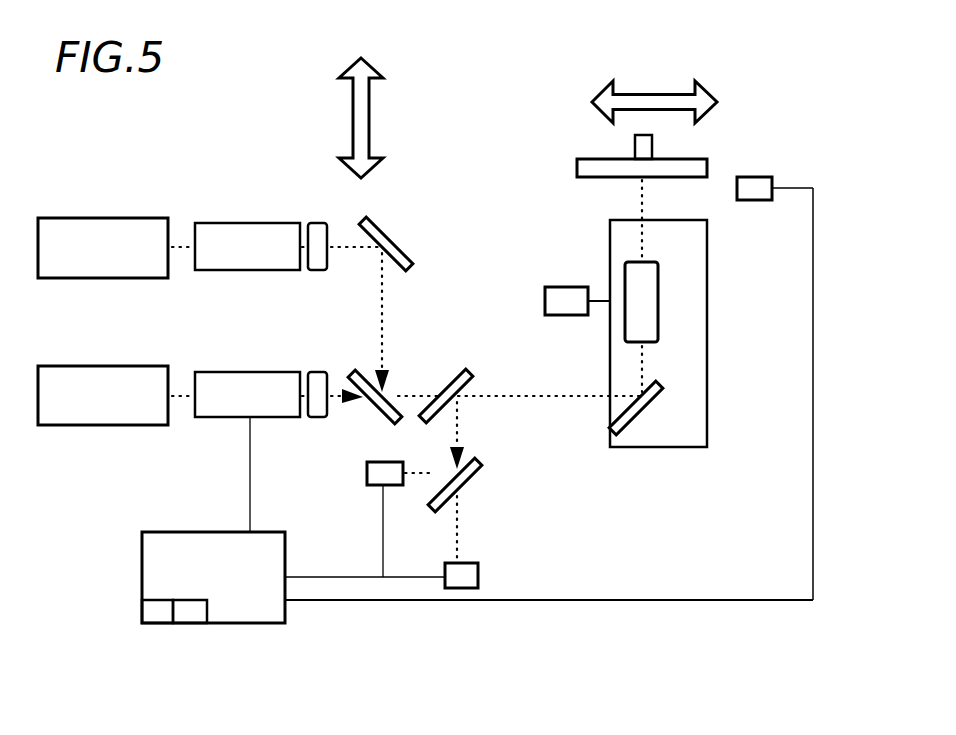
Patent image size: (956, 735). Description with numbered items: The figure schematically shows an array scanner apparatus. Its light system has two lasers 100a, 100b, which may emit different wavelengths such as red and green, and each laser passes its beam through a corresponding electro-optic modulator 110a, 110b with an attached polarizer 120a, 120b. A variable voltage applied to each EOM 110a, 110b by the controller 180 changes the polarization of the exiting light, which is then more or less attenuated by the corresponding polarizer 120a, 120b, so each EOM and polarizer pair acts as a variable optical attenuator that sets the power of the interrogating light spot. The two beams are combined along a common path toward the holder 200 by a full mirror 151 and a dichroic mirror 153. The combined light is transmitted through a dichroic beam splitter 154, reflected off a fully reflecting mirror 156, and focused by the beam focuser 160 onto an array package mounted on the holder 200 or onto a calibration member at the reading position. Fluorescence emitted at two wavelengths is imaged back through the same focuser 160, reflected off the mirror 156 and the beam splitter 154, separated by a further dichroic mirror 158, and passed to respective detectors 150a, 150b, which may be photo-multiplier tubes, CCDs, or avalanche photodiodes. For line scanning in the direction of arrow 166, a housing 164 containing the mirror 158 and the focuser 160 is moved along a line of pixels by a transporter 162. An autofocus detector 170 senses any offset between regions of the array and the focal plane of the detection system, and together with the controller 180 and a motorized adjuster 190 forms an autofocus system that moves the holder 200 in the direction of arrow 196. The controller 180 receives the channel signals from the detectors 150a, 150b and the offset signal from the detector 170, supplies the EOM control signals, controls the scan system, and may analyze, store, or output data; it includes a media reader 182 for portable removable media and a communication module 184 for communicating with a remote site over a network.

The laser 100a is at (113, 366).
The laser 100b is at (113, 218).
The electro-optic modulator 110a is at (230, 372).
The electro-optic modulator 110b is at (230, 223).
The polarizer 120a is at (311, 372).
The polarizer 120b is at (311, 223).
The detector 150a is at (365, 473).
The detector 150b is at (478, 577).
The full mirror 151 is at (387, 235).
The dichroic mirror 153 is at (395, 398).
The dichroic beam splitter 154 is at (473, 383).
The fully reflecting mirror 156 is at (648, 402).
The dichroic mirror 158 is at (467, 487).
The beam focuser 160 is at (658, 302).
The transporter 162 is at (567, 287).
The housing 164 is at (707, 348).
The arrow 166 is at (660, 90).
The autofocus detector 170 is at (752, 177).
The controller 180 is at (253, 623).
The media reader 182 is at (142, 617).
The communication module 184 is at (185, 623).
The motorized adjuster 190 is at (652, 152).
The arrow 196 is at (370, 112).
The holder 200 is at (577, 165).